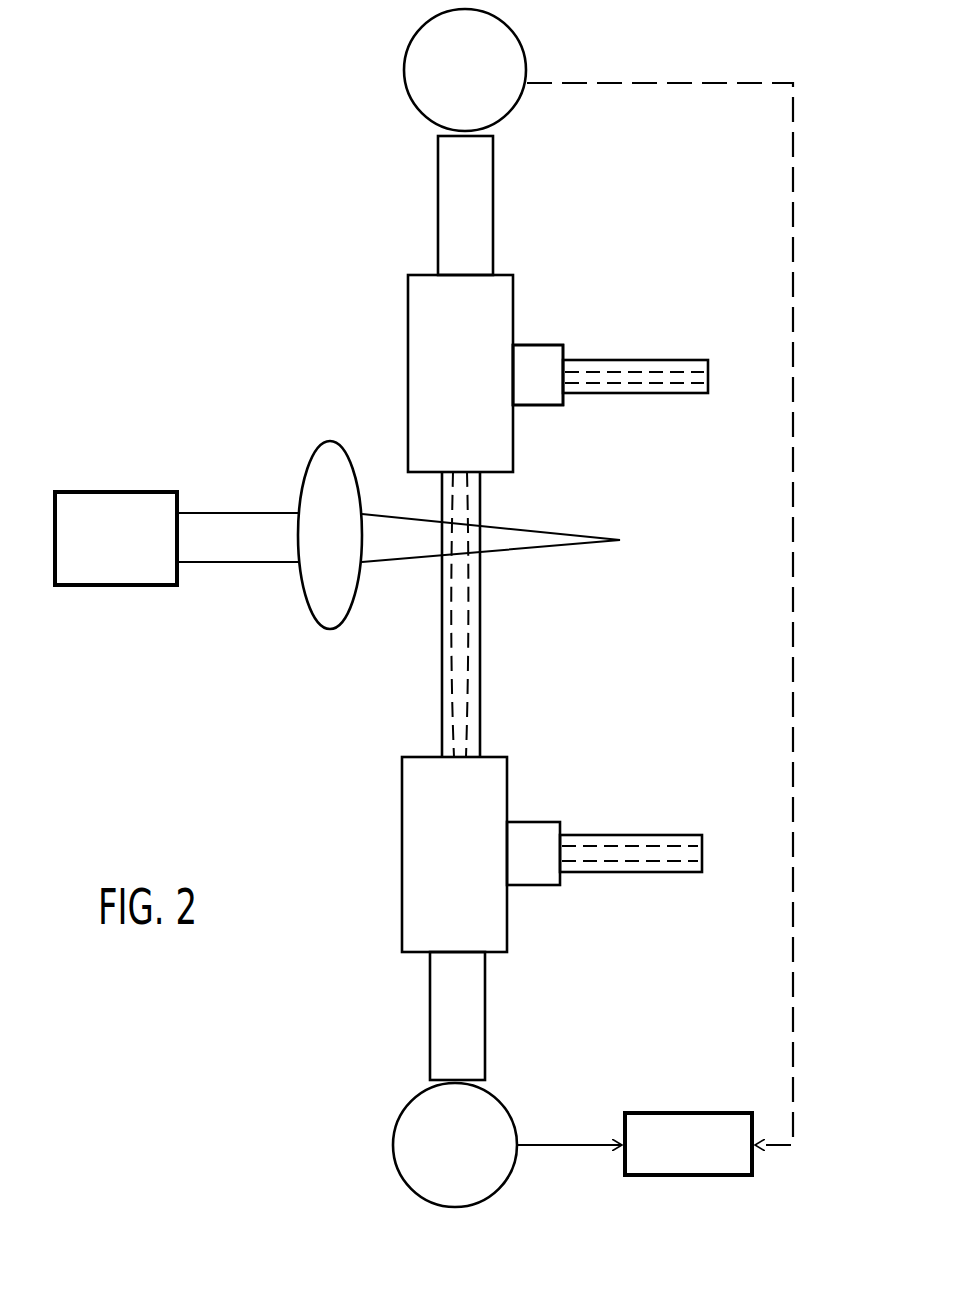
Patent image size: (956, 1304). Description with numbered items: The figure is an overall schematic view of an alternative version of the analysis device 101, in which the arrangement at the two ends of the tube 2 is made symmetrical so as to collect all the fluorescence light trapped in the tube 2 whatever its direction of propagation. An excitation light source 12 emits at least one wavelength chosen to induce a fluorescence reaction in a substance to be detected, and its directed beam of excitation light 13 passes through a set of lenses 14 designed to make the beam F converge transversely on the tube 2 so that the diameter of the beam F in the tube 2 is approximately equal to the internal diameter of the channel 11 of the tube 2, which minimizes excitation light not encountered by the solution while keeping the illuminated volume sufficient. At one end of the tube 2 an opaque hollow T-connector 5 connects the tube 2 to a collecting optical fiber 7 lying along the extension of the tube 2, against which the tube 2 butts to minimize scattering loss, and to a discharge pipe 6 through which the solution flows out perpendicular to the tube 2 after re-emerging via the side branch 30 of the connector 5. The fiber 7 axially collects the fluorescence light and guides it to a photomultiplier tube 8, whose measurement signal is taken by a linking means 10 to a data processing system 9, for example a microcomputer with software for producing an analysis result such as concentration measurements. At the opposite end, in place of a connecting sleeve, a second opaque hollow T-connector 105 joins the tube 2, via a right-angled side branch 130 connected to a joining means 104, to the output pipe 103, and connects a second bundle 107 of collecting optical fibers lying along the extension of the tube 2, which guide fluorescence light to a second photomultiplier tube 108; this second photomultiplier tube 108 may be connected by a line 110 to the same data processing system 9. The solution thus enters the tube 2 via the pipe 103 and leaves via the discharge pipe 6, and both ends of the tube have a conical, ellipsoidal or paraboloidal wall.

The analysis device 101 is at (275, 403).
The second photomultiplier tube 108 is at (527, 62).
The second bundle of collecting optical fibers 107 is at (493, 208).
The second opaque hollow T-connector 105 is at (408, 350).
The joining means 104 is at (548, 343).
The right-angled side branch 130 is at (540, 398).
The output pipe 103 is at (662, 395).
The tube 2 is at (480, 612).
The channel 11 is at (462, 667).
The excitation light source 12 is at (88, 492).
The directed beam of excitation light 13 is at (205, 565).
The set of lenses 14 is at (306, 452).
The beam F is at (570, 533).
The opaque hollow T-connector 5 is at (402, 800).
The side branch 30 is at (545, 820).
The discharge pipe 6 is at (678, 835).
The collecting optical fiber 7 is at (430, 1020).
The photomultiplier tube 8 is at (508, 1113).
The data processing system 9 is at (688, 1113).
The linking means 10 is at (565, 1147).
The line 110 is at (790, 208).